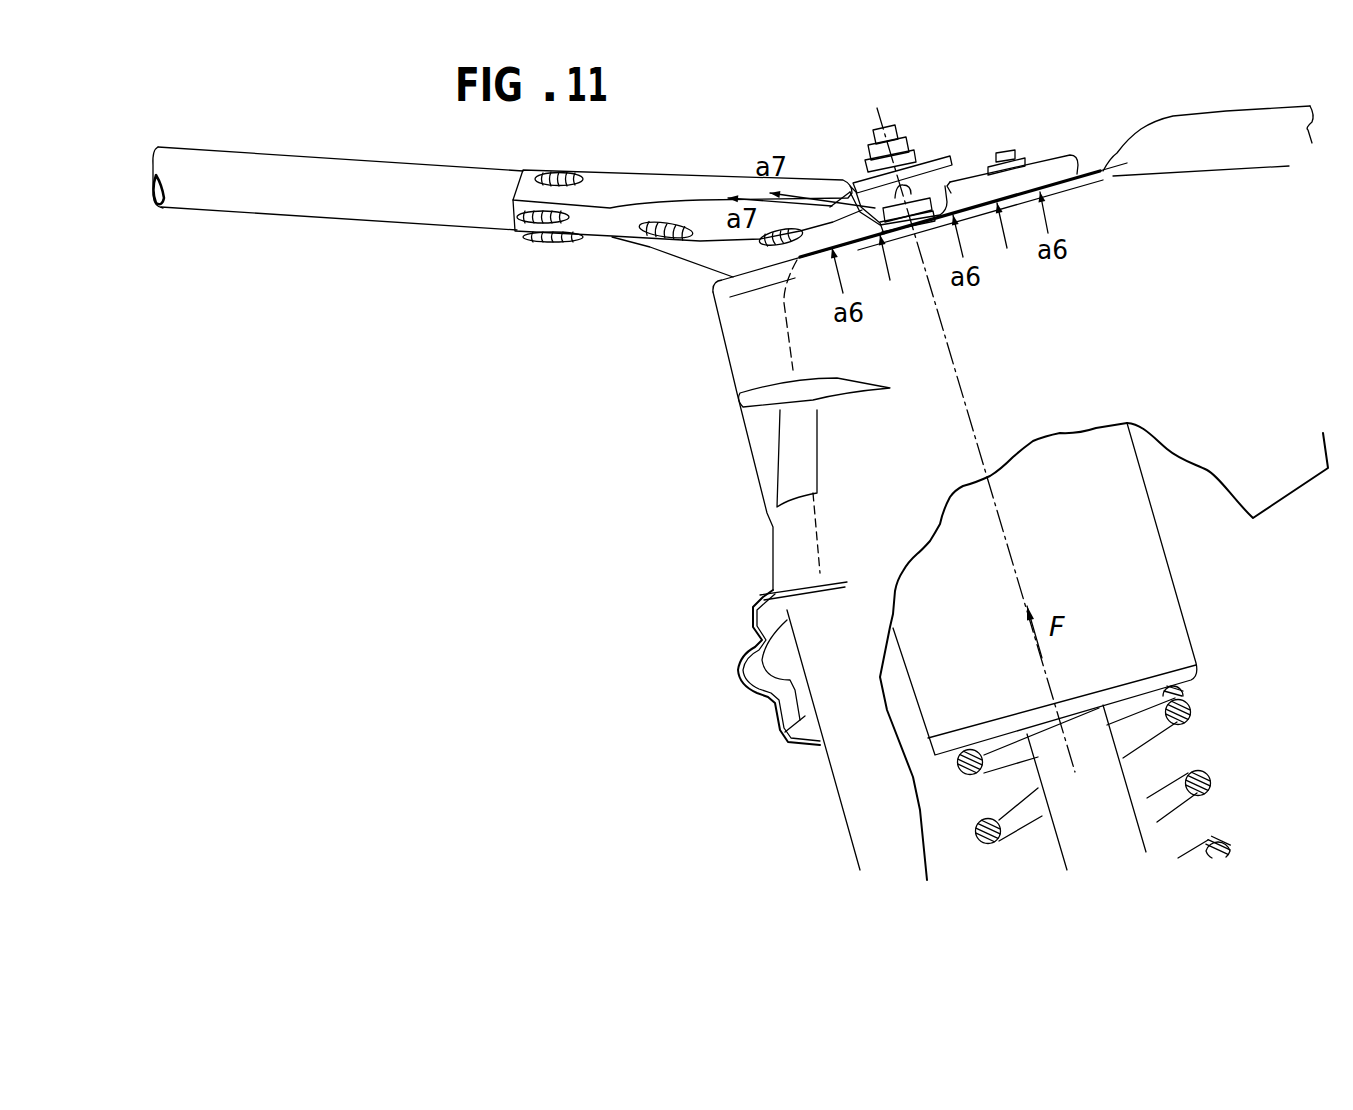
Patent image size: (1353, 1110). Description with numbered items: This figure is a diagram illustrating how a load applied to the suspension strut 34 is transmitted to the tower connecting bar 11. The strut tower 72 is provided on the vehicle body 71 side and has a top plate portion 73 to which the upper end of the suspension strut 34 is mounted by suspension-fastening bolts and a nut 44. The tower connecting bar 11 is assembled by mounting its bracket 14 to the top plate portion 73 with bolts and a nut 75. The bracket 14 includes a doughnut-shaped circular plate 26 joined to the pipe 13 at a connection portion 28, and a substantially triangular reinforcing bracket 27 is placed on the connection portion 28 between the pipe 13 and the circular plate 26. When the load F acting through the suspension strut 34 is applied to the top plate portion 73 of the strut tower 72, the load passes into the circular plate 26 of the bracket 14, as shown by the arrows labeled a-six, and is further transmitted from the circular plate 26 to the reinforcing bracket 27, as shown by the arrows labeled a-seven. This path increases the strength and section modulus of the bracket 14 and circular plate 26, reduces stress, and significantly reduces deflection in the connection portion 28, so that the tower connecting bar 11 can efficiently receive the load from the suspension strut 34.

The tower connecting bar 11 is at (498, 257).
The pipe 13 is at (357, 222).
The bracket 14 is at (803, 147).
The circular plate 26 is at (975, 173).
The reinforcing bracket 27 is at (827, 176).
The connection portion 28 is at (677, 253).
The suspension strut 34 is at (949, 825).
The nut 44 is at (1024, 150).
The vehicle body 71 is at (627, 567).
The strut tower 72 is at (747, 450).
The top plate portion 73 is at (1080, 174).
The nut 75 is at (920, 197).